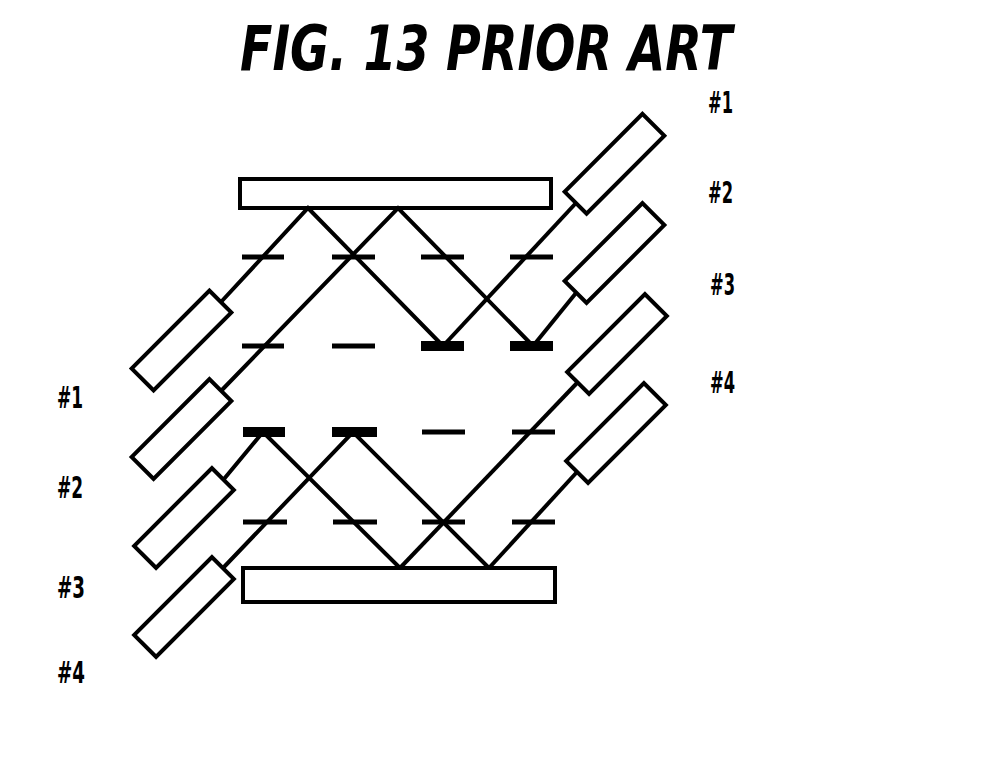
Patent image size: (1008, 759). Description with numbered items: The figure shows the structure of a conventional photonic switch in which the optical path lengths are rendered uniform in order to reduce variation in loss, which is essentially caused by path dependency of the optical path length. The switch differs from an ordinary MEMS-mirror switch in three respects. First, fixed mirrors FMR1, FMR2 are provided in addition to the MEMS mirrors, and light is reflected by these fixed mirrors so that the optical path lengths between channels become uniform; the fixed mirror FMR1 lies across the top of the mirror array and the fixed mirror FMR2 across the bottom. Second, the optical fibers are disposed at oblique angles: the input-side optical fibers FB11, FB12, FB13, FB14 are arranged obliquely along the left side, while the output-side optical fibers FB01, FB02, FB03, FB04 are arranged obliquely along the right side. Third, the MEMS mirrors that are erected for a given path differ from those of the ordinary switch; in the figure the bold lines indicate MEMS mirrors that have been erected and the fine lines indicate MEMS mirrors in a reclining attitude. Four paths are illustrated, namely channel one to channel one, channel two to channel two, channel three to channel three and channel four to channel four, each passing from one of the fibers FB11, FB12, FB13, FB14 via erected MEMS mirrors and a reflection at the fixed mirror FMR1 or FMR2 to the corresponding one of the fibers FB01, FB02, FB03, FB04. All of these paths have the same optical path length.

The fixed mirror FMR1 is at (390, 178).
The fixed mirror FMR2 is at (396, 602).
The optical fiber FB01 is at (647, 153).
The optical fiber FB02 is at (645, 243).
The optical fiber FB03 is at (640, 334).
The optical fiber FB04 is at (632, 443).
The optical fiber FB11 is at (152, 352).
The optical fiber FB12 is at (152, 440).
The optical fiber FB13 is at (152, 528).
The optical fiber FB14 is at (152, 618).